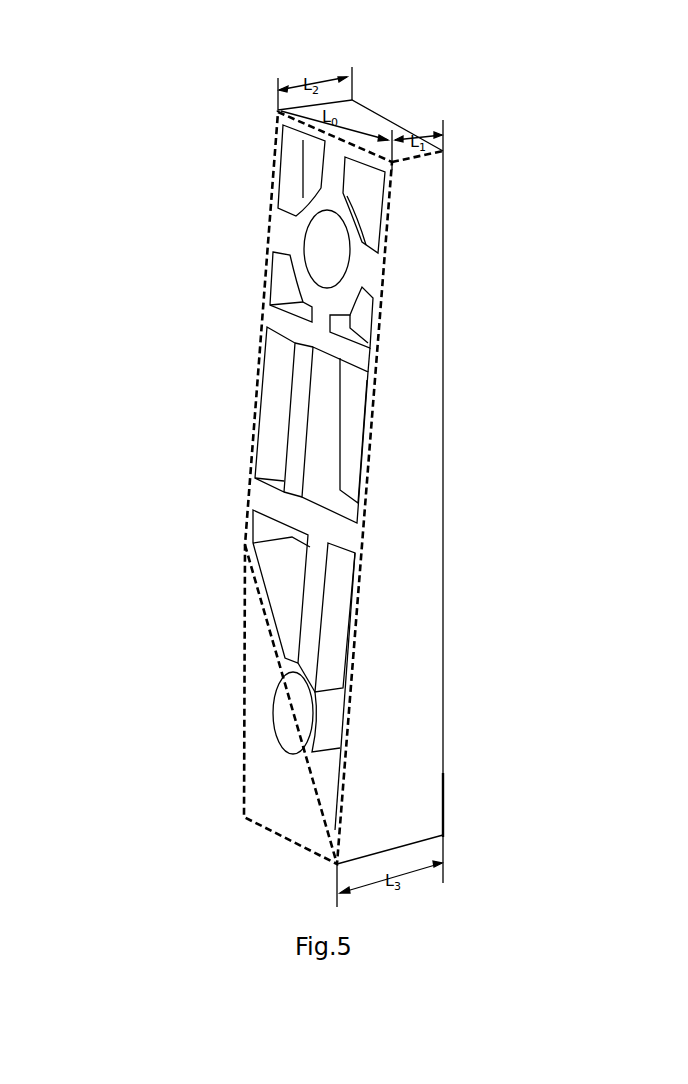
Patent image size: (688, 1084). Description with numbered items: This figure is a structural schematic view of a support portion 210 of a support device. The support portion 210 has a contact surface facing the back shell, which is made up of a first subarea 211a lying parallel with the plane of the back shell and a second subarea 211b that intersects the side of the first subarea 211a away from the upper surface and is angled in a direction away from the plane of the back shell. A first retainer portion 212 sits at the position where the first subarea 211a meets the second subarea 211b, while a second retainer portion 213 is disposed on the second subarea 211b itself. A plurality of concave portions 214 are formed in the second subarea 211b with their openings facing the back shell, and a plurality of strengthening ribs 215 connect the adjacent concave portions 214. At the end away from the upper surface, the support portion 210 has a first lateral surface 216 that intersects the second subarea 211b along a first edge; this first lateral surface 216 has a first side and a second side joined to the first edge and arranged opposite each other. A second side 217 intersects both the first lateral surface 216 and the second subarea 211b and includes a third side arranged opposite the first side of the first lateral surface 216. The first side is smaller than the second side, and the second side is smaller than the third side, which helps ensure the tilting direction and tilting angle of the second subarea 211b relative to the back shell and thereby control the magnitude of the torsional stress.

The support portion 210 is at (295, 26).
The first subarea 211a is at (243, 795).
The second subarea 211b is at (278, 130).
The first retainer portion 212 is at (282, 713).
The second retainer portion 213 is at (327, 240).
The concave portions 214 is at (315, 170).
The strengthening ribs 215 is at (352, 359).
The first lateral surface 216 is at (368, 118).
The second side 217 is at (403, 753).